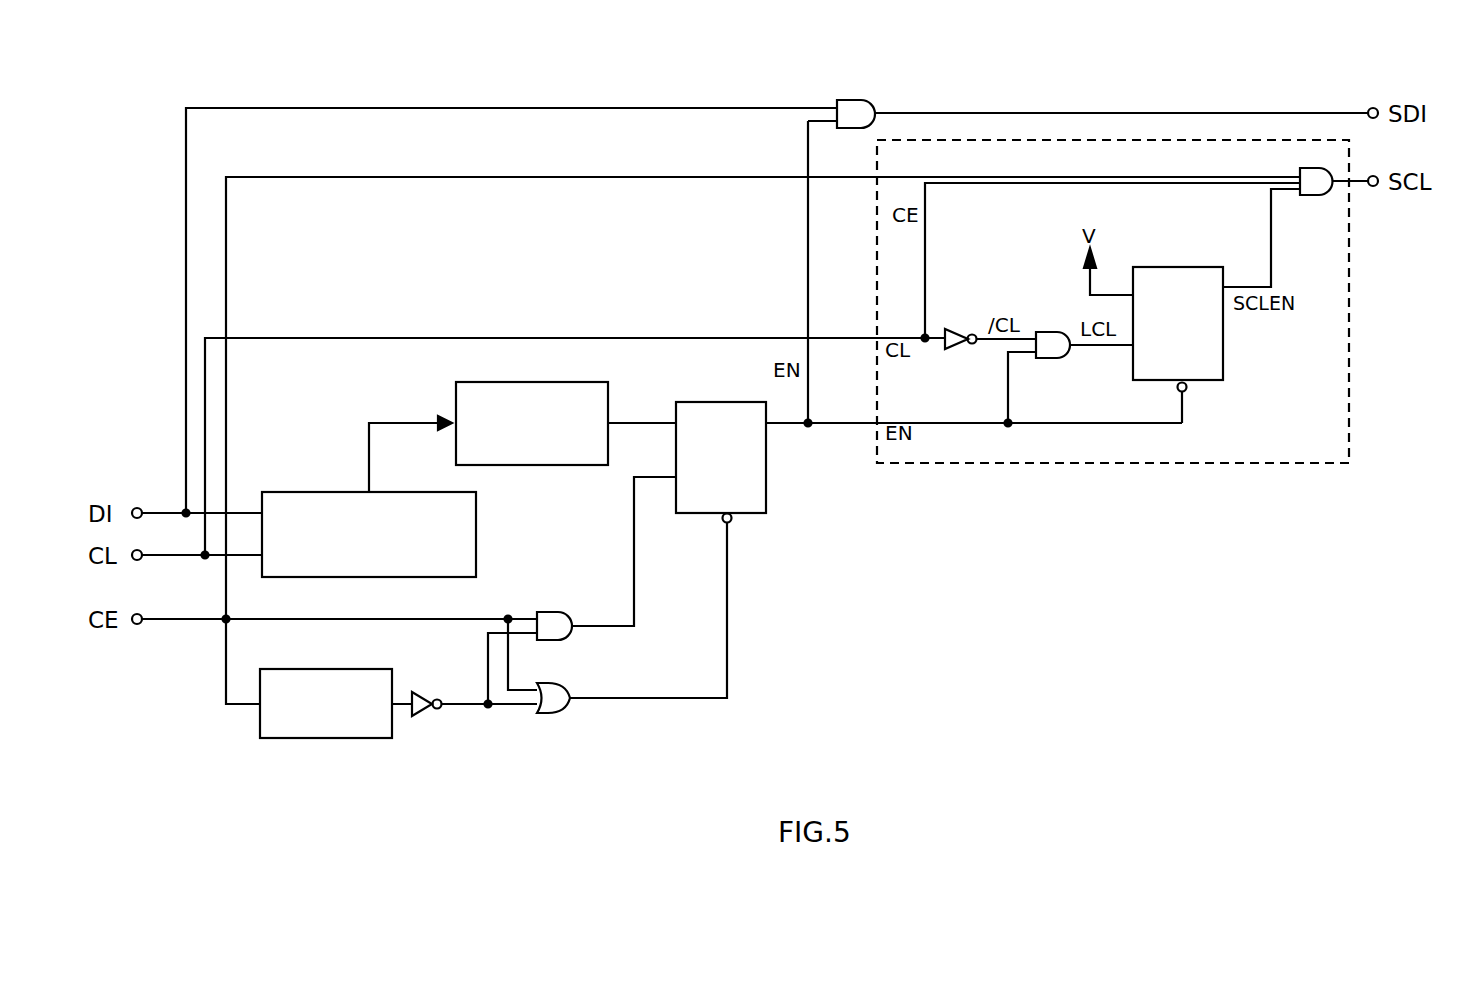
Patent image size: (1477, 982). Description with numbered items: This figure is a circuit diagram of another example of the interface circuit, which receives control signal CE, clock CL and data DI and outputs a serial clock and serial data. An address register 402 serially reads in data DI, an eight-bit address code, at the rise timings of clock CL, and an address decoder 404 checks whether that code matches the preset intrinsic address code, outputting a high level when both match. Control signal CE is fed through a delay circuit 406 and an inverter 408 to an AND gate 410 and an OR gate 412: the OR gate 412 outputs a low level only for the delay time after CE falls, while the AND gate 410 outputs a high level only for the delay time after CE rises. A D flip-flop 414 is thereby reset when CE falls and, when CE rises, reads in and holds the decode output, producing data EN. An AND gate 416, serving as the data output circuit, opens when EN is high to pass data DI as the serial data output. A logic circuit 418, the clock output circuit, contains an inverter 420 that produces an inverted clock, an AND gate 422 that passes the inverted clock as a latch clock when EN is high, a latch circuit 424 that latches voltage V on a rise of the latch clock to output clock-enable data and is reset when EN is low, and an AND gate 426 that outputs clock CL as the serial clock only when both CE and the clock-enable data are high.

The address register 402 is at (297, 490).
The address decoder 404 is at (568, 465).
The delay circuit 406 is at (303, 740).
The inverter 408 is at (423, 715).
The AND gate 410 is at (553, 608).
The OR gate 412 is at (563, 683).
The D flip-flop 414 is at (766, 487).
The AND gate 416 is at (862, 100).
The logic circuit 418 is at (1350, 421).
The inverter 420 is at (950, 327).
The AND gate 422 is at (1053, 358).
The latch circuit 424 is at (1178, 267).
The AND gate 426 is at (1318, 196).